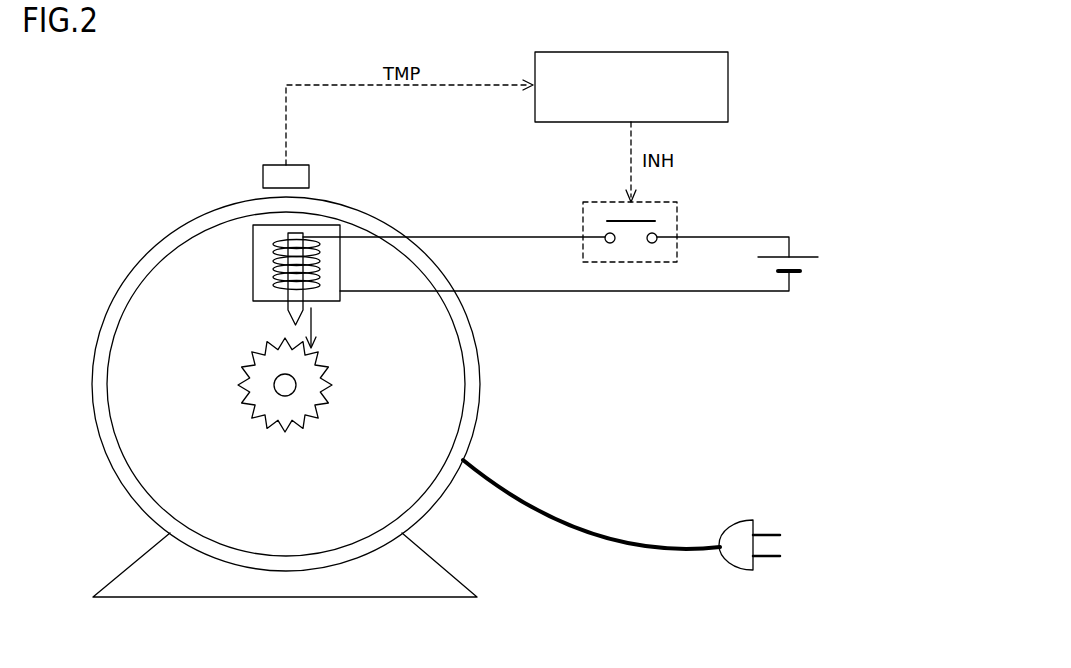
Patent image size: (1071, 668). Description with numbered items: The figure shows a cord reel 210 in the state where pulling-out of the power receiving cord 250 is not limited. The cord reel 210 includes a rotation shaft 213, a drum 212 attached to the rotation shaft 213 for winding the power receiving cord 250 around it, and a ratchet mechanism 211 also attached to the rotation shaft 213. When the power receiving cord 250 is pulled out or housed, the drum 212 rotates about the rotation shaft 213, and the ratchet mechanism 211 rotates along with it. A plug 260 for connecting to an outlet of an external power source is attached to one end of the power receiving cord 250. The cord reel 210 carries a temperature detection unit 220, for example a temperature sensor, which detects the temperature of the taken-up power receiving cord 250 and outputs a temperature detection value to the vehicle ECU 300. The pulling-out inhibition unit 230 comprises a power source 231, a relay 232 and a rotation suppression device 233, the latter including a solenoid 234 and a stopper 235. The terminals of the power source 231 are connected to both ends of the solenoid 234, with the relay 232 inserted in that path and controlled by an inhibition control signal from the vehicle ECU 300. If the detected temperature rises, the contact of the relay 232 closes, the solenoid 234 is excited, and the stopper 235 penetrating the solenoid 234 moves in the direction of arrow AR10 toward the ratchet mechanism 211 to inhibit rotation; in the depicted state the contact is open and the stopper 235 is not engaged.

The cord reel 210 is at (83, 357).
The ratchet mechanism 211 is at (245, 376).
The drum 212 is at (108, 445).
The rotation shaft 213 is at (294, 392).
The temperature detection unit 220 is at (296, 165).
The pulling-out inhibition unit 230 is at (582, 233).
The power source 231 is at (805, 256).
The relay 232 is at (665, 203).
The rotation suppression device 233 is at (253, 290).
The solenoid 234 is at (273, 250).
The stopper 235 is at (290, 320).
The power receiving cord 250 is at (604, 540).
The plug 260 is at (748, 572).
The vehicle ECU 300 is at (690, 52).
The arrow AR10 is at (314, 324).